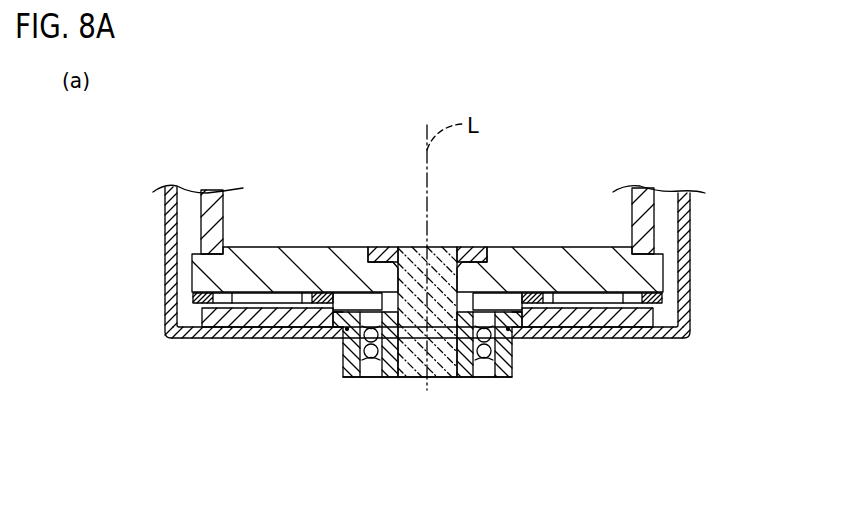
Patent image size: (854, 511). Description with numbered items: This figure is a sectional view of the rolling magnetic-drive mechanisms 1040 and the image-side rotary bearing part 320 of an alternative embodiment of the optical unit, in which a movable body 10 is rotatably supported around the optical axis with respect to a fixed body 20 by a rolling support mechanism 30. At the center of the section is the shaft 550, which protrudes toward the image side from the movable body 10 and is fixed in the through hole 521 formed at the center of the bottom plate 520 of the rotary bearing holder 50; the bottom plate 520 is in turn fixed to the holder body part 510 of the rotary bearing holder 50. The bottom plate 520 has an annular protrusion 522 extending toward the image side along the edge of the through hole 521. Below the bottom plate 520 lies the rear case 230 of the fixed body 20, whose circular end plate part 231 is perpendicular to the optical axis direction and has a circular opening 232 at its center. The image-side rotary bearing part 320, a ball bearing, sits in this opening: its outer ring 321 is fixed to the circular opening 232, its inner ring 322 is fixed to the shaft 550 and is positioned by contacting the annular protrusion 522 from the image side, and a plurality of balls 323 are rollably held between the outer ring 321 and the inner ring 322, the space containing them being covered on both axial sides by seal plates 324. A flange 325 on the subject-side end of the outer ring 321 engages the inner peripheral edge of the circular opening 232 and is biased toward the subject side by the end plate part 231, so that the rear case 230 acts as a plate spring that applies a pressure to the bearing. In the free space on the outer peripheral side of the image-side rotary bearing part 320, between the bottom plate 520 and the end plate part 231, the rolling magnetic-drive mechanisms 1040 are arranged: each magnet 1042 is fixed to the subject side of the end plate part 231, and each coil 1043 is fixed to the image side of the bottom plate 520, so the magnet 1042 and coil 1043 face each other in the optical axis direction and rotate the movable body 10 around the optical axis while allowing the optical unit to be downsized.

The movable body 10 is at (420, 213).
The fixed body 20 is at (471, 294).
The rolling support mechanism 30 is at (481, 395).
The rotary bearing holder 50 is at (420, 213).
The rear case 230 is at (471, 294).
The end plate part 231 is at (660, 338).
The circular opening 232 is at (348, 345).
The image-side rotary bearing part 320 is at (481, 395).
The outer ring 321 is at (508, 360).
The inner ring 322 is at (463, 372).
The balls 323 is at (489, 373).
The seal plates 324 is at (482, 378).
The flange 325 is at (533, 318).
The holder body part 510 is at (632, 225).
The bottom plate 520 is at (420, 226).
The through hole 521 is at (445, 256).
The annular protrusion 522 is at (383, 305).
The shaft 550 is at (411, 372).
The rolling magnetic-drive mechanism 1040 is at (435, 369).
The magnet 1042 is at (253, 322).
The coil 1043 is at (196, 304).